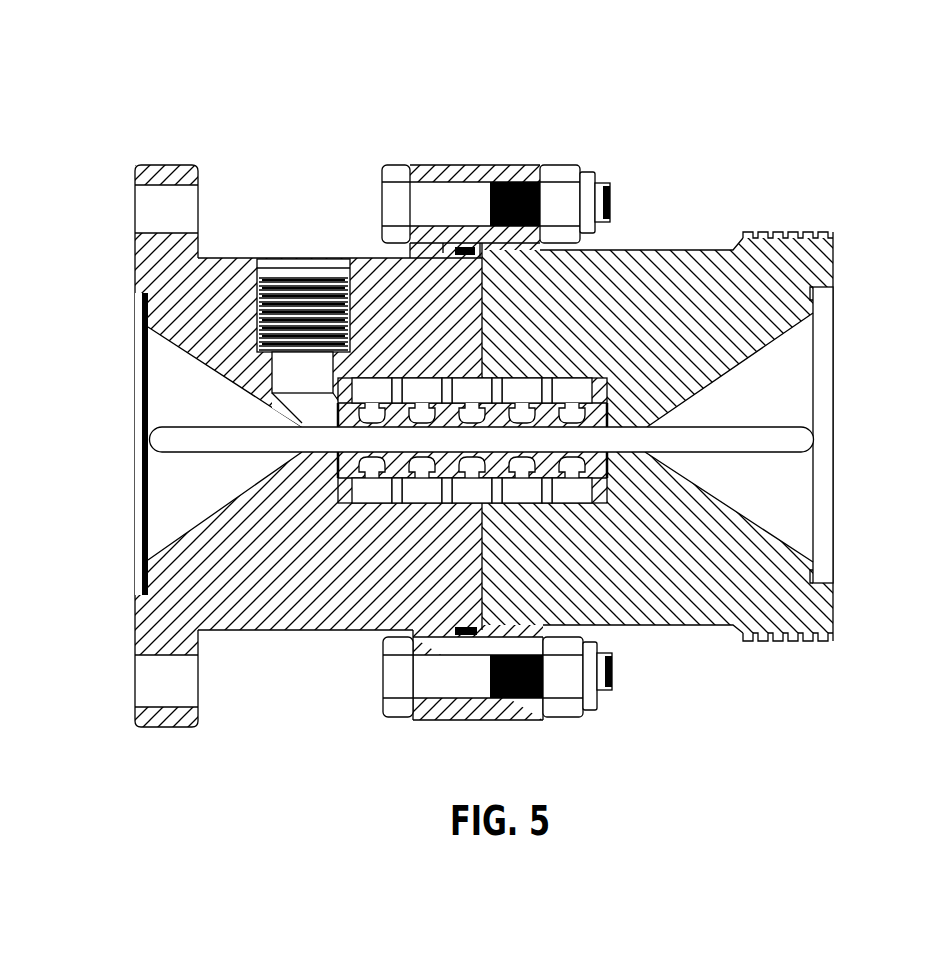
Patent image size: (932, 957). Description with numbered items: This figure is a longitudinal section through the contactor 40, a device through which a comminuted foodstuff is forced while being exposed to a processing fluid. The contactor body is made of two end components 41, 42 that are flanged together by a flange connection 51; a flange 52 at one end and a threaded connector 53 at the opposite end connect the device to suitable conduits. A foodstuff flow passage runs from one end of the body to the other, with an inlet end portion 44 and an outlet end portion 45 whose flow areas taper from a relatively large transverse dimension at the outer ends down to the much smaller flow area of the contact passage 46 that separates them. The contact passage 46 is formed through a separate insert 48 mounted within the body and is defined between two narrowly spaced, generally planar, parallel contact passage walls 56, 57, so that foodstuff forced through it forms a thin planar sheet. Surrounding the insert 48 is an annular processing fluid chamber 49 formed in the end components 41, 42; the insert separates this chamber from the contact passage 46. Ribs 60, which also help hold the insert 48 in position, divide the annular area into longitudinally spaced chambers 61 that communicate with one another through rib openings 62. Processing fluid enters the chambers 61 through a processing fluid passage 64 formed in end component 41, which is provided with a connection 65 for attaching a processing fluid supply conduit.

The contactor 40 is at (771, 85).
The contactor body end component 41 is at (237, 630).
The contactor body end component 42 is at (725, 628).
The inlet end portion 44 is at (164, 488).
The outlet end portion 45 is at (809, 374).
The contact passage 46 is at (345, 440).
The insert 48 is at (598, 402).
The processing fluid chamber 49 is at (577, 378).
The flange connection 51 is at (490, 162).
The flange 52 is at (158, 165).
The threaded connector 53 is at (823, 233).
The contact passage wall 56 is at (549, 405).
The contact passage wall 57 is at (598, 455).
The ribs 60 is at (547, 503).
The chambers 61 is at (413, 488).
The rib openings 62 is at (447, 382).
The processing fluid passage 64 is at (291, 369).
The connection 65 is at (297, 277).